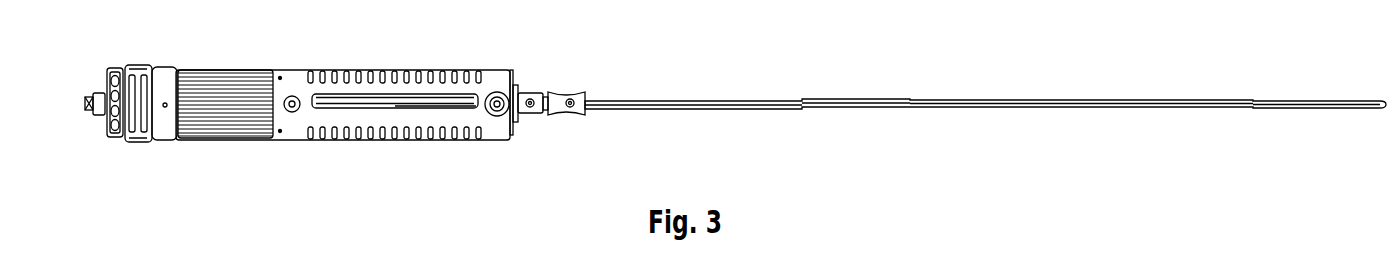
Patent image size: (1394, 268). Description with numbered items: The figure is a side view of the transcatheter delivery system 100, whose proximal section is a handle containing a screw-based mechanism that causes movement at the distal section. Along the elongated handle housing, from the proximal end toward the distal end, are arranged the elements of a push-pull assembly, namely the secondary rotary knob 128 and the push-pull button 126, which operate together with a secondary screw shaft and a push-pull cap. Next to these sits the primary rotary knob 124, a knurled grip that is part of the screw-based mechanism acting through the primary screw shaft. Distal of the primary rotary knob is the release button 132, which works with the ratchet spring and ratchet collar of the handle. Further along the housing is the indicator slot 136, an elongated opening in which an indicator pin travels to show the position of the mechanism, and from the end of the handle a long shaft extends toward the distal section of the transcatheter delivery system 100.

The transcatheter delivery system 100 is at (718, 118).
The primary rotary knob 124 is at (228, 139).
The push-pull button 126 is at (140, 145).
The secondary rotary knob 128 is at (112, 120).
The release button 132 is at (292, 115).
The indicator slot 136 is at (389, 107).